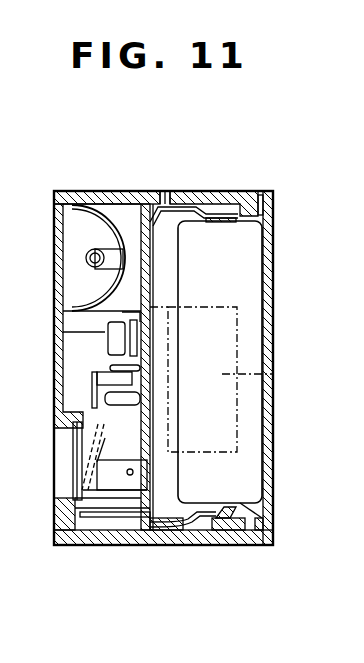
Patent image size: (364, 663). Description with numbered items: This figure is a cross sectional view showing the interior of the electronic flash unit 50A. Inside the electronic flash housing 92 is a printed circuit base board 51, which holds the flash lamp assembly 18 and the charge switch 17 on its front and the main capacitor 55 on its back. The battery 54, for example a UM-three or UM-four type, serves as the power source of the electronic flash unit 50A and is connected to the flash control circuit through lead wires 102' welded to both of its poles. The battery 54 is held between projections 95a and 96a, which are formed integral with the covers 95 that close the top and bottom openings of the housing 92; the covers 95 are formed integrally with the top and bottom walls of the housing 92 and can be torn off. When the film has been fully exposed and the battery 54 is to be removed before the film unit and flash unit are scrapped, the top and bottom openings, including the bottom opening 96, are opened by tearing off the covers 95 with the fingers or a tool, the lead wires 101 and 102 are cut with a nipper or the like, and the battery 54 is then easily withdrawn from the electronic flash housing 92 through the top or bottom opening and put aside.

The electronic flash unit 50A is at (150, 183).
The printed circuit base board 51 is at (126, 212).
The lead wire 101 is at (172, 190).
The cover 95 is at (226, 203).
The projection 95a is at (240, 213).
The battery 54 is at (250, 264).
The electronic flash housing 92 is at (272, 317).
The main capacitor 55 is at (272, 374).
The projection 96a is at (240, 522).
The bottom opening 96 is at (222, 535).
The lead wires 102' is at (134, 552).
The flash lamp assembly 18 is at (68, 232).
The lead wire 102 is at (73, 405).
The charge switch 17 is at (73, 462).